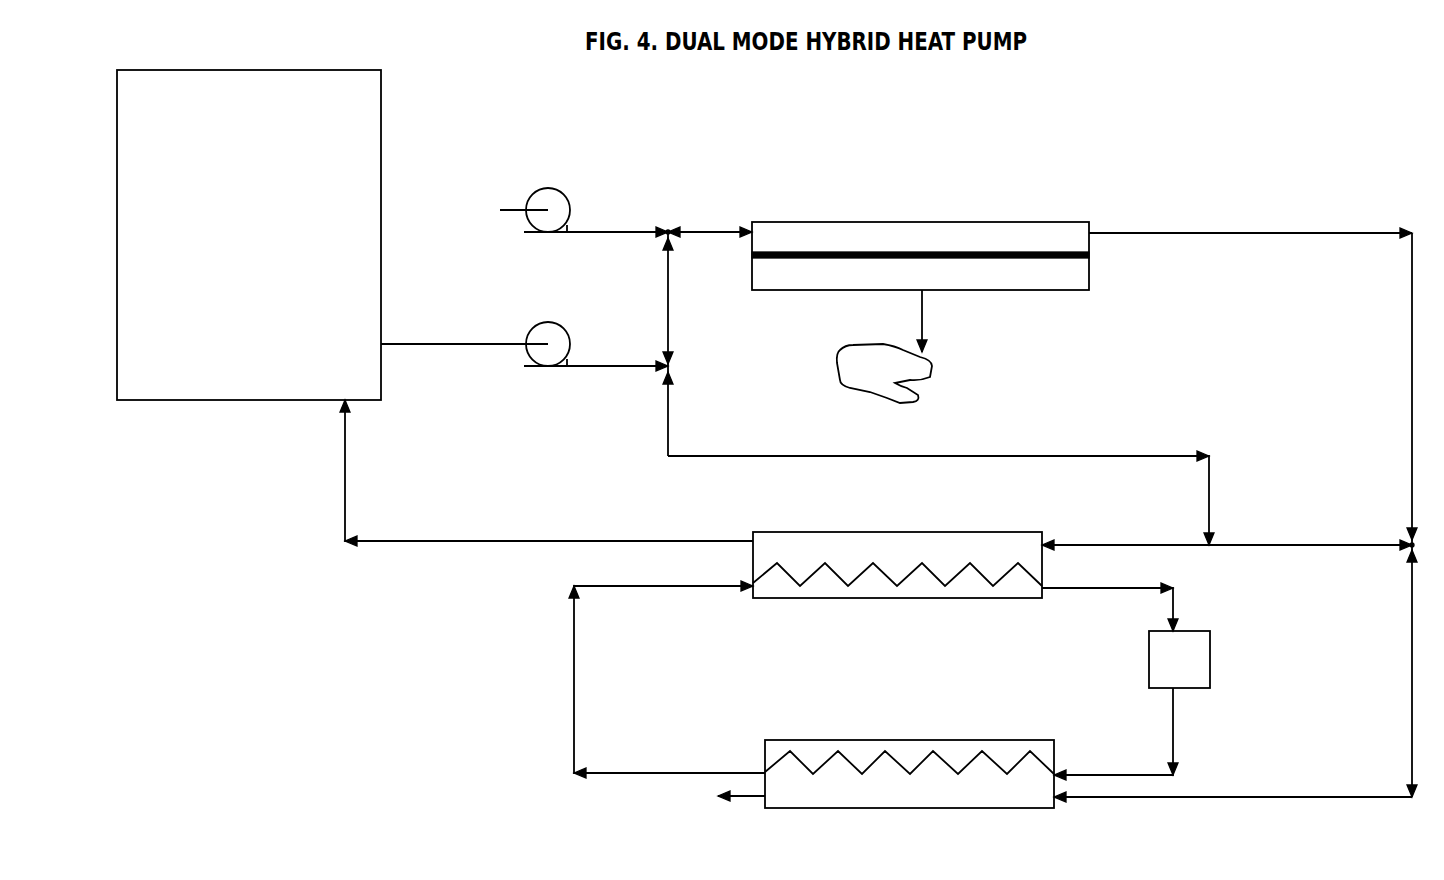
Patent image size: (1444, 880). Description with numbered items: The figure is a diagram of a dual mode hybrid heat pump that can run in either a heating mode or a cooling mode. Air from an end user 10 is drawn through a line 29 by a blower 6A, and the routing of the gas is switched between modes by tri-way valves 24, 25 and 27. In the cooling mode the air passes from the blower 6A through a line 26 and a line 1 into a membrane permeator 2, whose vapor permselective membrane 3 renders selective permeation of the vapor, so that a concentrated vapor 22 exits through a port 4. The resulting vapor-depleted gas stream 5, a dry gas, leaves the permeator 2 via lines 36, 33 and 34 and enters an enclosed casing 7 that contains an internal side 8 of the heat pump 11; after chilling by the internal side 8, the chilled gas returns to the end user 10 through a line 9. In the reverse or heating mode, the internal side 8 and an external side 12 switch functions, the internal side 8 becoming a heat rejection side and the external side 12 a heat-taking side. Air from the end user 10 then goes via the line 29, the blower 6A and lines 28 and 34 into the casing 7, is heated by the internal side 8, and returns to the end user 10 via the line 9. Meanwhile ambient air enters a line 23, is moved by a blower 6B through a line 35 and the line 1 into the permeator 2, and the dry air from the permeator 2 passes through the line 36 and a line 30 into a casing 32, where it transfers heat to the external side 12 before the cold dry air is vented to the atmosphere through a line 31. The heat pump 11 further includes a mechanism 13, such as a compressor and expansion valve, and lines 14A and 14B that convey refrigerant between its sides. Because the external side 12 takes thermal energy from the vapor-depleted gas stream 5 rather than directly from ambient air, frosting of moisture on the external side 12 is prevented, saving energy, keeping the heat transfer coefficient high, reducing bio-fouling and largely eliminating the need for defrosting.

The line 1 is at (725, 228).
The membrane permeator 2 is at (836, 220).
The permselective membrane 3 is at (1016, 250).
The port 4 is at (922, 323).
The vapor-depleted gas stream 5 is at (1195, 232).
The blower 6A is at (560, 320).
The blower 6B is at (545, 197).
The enclosed casing 7 is at (968, 533).
The internal side 8 is at (910, 575).
The line 9 is at (630, 540).
The end user 10 is at (249, 235).
The heat pump 11 is at (960, 626).
The external side 12 is at (925, 765).
The mechanism 13 is at (1148, 680).
The line 14A is at (574, 680).
The line 14B is at (1173, 710).
The concentrated vapor 22 is at (884, 373).
The line 23 is at (498, 203).
The tri-way valve 24 is at (665, 228).
The tri-way valve 25 is at (1400, 530).
The line 26 is at (670, 270).
The tri-way valve 27 is at (678, 365).
The line 28 is at (1145, 450).
The line 29 is at (452, 340).
The line 30 is at (1288, 797).
The line 31 is at (729, 812).
The casing 32 is at (968, 740).
The line 33 is at (1287, 548).
The line 34 is at (1122, 540).
The line 35 is at (600, 236).
The line 36 is at (1412, 408).